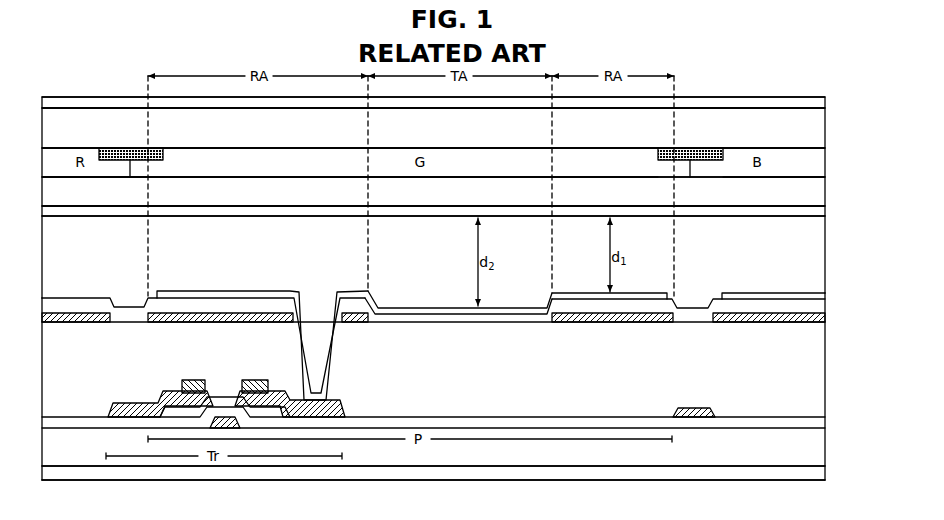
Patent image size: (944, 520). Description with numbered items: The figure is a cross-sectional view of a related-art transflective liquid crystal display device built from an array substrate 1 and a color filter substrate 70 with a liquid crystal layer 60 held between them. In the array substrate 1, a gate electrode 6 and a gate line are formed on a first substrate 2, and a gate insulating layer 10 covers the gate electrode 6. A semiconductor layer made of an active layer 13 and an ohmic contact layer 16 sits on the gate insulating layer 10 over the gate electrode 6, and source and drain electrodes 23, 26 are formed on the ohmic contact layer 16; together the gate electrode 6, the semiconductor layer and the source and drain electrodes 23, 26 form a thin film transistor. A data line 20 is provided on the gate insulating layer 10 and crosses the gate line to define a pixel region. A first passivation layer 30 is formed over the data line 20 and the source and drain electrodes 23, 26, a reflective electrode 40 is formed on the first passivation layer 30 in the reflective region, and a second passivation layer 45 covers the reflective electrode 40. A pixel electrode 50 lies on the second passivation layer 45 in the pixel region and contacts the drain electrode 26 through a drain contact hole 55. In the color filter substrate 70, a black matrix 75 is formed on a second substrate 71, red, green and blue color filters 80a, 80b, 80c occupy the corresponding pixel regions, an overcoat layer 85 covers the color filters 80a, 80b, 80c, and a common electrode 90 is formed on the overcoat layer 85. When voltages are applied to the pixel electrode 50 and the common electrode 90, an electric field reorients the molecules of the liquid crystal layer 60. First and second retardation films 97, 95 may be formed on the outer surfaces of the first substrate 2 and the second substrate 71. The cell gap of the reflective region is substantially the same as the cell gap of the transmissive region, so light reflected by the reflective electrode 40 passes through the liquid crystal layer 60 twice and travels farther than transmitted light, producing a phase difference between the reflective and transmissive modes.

The array substrate 1 is at (828, 298).
The first substrate 2 is at (522, 463).
The gate electrode 6 is at (222, 428).
The gate insulating layer 10 is at (466, 412).
The active layer 13 is at (223, 400).
The ohmic contact layer 16 is at (186, 380).
The data line 20 is at (690, 406).
The source electrode 23 is at (160, 402).
The drain electrode 26 is at (338, 404).
The first passivation layer 30 is at (440, 362).
The reflective electrode 40 is at (212, 313).
The second passivation layer 45 is at (518, 322).
The pixel electrode 50 is at (411, 311).
The drain contact hole 55 is at (316, 308).
The liquid crystal layer 60 is at (825, 257).
The color filter substrate 70 is at (830, 112).
The second substrate 71 is at (413, 133).
The black matrix 75 is at (113, 148).
The red color filter 80a is at (57, 156).
The green color filter 80b is at (507, 161).
The blue color filter 80c is at (780, 162).
The overcoat layer 85 is at (427, 195).
The common electrode 90 is at (737, 220).
The second retardation film 95 is at (825, 103).
The first retardation film 97 is at (825, 472).